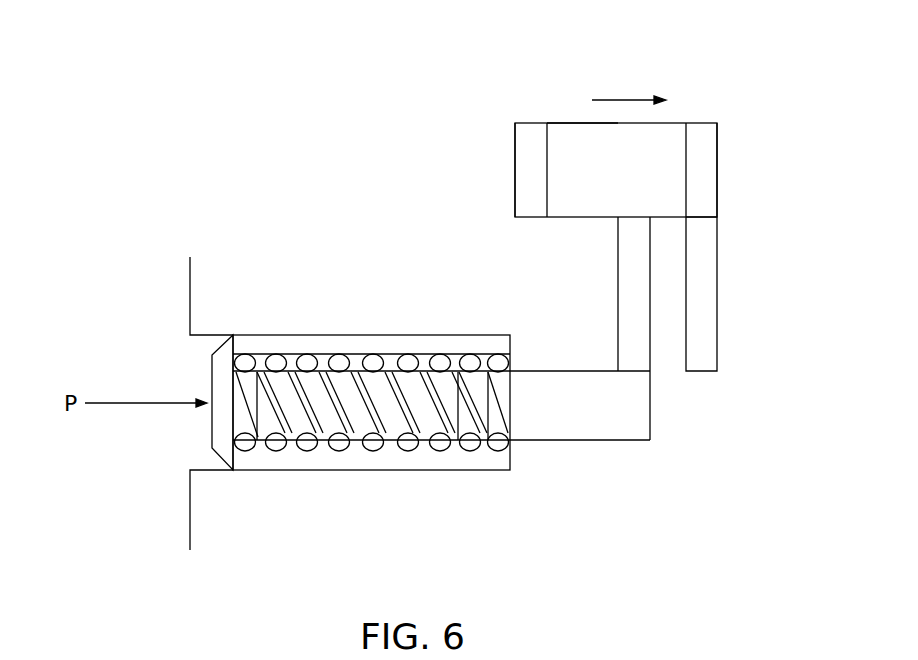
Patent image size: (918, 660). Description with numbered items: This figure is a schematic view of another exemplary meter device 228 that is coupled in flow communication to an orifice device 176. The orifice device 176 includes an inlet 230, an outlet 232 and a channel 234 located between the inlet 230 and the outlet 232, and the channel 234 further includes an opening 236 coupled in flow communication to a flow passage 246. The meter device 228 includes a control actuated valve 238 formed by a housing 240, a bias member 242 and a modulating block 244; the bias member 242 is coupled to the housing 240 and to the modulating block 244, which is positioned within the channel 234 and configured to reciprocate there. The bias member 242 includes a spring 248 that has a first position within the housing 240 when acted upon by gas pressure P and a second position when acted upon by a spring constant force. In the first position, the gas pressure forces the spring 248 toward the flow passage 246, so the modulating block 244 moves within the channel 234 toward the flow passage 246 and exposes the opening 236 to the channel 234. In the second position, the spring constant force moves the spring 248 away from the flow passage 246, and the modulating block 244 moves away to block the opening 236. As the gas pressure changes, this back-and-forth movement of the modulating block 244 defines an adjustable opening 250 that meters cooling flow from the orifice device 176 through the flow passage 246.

The orifice device 176 is at (565, 122).
The meter device 228 is at (318, 318).
The inlet 230 is at (514, 170).
The outlet 232 is at (718, 133).
The channel 234 is at (582, 122).
The opening 236 is at (703, 168).
The control actuated valve 238 is at (535, 367).
The housing 240 is at (250, 333).
The bias member 242 is at (193, 357).
The modulating block 244 is at (635, 207).
The flow passage 246 is at (703, 313).
The spring 248 is at (443, 360).
The adjustable opening 250 is at (700, 218).